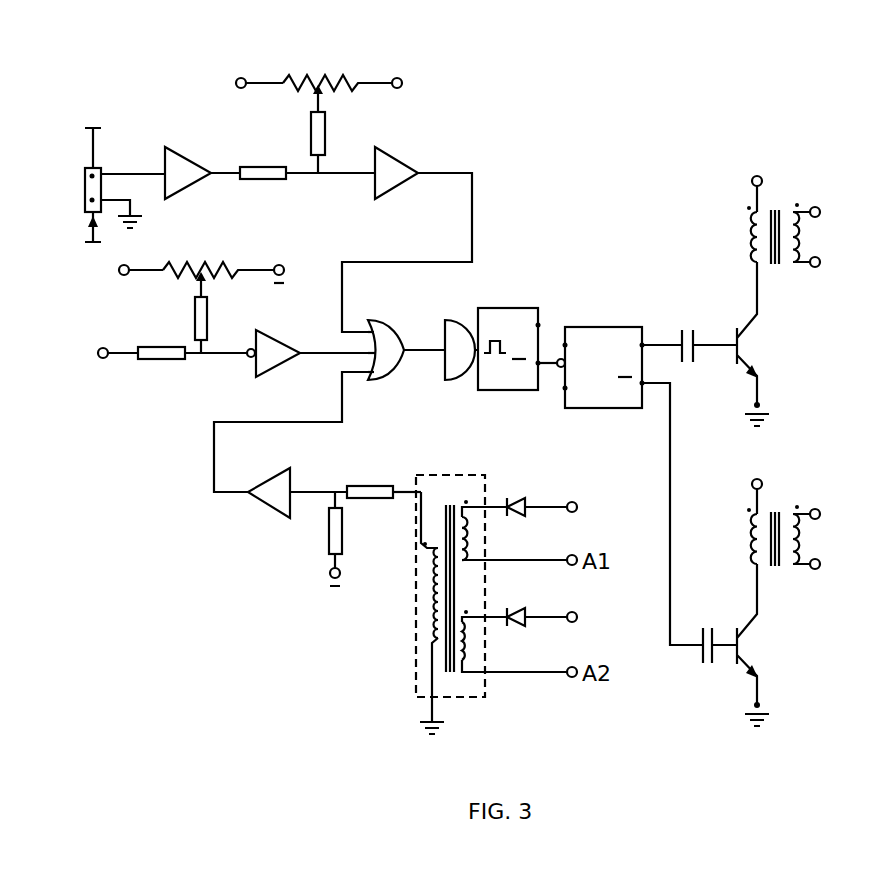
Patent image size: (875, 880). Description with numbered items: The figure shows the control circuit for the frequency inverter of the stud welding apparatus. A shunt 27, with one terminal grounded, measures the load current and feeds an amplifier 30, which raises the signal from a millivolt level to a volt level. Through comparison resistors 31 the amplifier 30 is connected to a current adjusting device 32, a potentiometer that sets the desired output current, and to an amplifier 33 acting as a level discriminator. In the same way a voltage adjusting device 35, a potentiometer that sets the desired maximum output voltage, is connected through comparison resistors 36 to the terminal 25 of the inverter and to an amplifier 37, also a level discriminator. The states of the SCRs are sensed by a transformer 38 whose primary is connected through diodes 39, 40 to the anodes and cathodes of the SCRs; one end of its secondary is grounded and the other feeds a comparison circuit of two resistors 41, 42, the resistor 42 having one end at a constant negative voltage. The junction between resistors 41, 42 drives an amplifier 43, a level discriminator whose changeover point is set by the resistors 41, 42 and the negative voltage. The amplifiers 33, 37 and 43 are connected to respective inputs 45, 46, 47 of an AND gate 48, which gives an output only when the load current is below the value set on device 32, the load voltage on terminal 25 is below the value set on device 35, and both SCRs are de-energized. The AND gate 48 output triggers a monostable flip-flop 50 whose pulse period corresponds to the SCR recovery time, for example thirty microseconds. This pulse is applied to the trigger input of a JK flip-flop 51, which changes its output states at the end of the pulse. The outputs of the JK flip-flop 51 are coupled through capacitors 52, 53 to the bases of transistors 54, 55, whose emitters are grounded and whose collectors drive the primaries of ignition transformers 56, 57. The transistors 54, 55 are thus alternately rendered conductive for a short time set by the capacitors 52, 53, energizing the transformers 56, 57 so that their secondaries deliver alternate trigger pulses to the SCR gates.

The terminal 25 is at (98, 356).
The shunt 27 is at (86, 186).
The amplifier 30 is at (177, 152).
The comparison resistors 31 is at (249, 166).
The current adjusting device 32 is at (318, 78).
The amplifier 33 is at (389, 152).
The voltage adjusting device 35 is at (220, 264).
The comparison resistors 36 is at (208, 311).
The amplifier 37 is at (271, 335).
The transformer 38 is at (412, 677).
The diode 39 is at (520, 498).
The diode 40 is at (520, 609).
The resistor 41 is at (366, 486).
The resistor 42 is at (342, 522).
The amplifier 43 is at (271, 511).
The input 45 is at (372, 330).
The input 46 is at (366, 358).
The input 47 is at (372, 376).
The AND gate 48 is at (393, 327).
The monostable flip-flop 50 is at (504, 308).
The JK flip-flop 51 is at (598, 327).
The capacitor 52 is at (692, 330).
The capacitor 53 is at (716, 630).
The transistor 54 is at (745, 343).
The transistor 55 is at (745, 643).
The ignition transformer 56 is at (750, 241).
The ignition transformer 57 is at (750, 543).